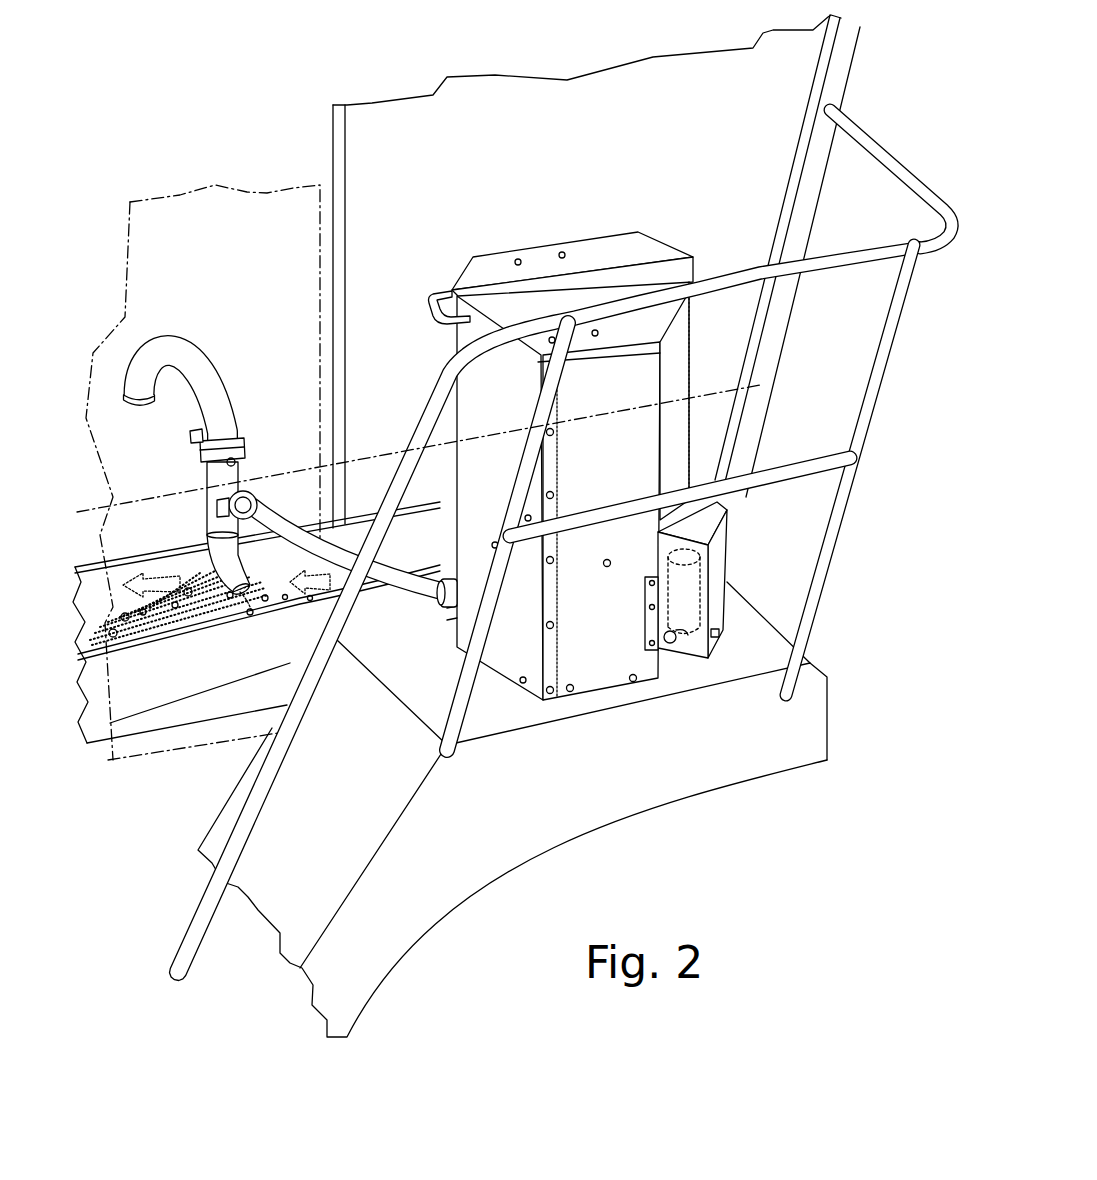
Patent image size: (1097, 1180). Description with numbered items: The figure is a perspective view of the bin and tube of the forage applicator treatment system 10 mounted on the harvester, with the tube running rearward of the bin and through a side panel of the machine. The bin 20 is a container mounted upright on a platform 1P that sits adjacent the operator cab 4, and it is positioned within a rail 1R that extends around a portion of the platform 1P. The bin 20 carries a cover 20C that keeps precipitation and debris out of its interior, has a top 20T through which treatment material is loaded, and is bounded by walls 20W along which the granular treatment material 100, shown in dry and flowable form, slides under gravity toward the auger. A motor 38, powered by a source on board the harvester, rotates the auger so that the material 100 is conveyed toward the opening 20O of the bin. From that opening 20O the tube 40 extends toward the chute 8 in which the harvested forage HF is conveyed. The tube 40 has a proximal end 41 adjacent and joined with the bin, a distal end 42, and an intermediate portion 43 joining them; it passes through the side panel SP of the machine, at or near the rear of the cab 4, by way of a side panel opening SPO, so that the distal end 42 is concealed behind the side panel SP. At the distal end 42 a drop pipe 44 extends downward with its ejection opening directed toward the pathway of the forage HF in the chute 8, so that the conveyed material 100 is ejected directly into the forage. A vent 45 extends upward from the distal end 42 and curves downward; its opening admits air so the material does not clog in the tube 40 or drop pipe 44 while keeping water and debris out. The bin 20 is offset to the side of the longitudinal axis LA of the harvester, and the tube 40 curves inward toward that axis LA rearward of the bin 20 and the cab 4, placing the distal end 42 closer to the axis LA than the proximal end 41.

The operator cab 4 is at (803, 95).
The system 10 is at (603, 187).
The bin 20 is at (637, 466).
The cover 20C is at (681, 275).
The top 20T is at (683, 307).
The walls 20W is at (680, 392).
The opening 20O is at (447, 613).
The rail 1R is at (873, 402).
The platform 1P is at (747, 633).
The motor 38 is at (696, 588).
The tube 40 is at (337, 549).
The proximal end 41 is at (437, 603).
The distal end 42 is at (243, 491).
The intermediate portion 43 is at (322, 573).
The drop pipe 44 is at (235, 592).
The vent 45 is at (205, 370).
The chute 8 is at (93, 558).
The treatment material 100 is at (207, 608).
The harvested forage HF is at (187, 597).
The longitudinal axis LA is at (157, 497).
The side panel SP is at (108, 418).
The side panel opening SPO is at (270, 503).